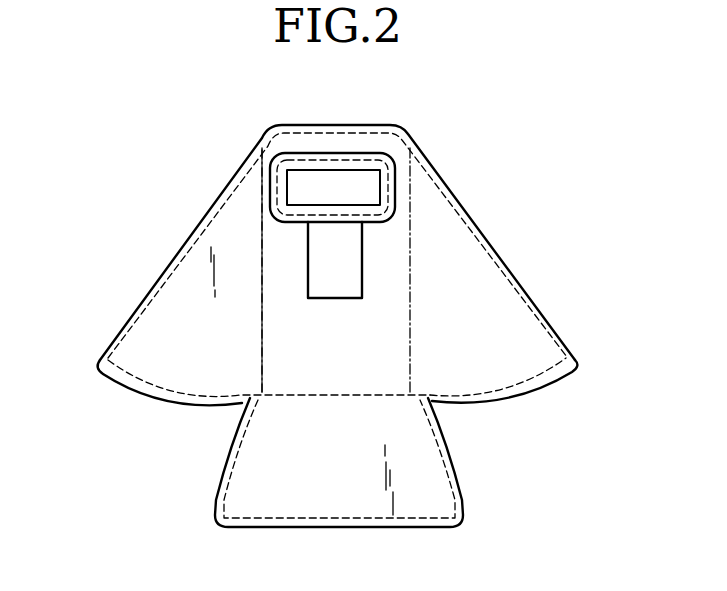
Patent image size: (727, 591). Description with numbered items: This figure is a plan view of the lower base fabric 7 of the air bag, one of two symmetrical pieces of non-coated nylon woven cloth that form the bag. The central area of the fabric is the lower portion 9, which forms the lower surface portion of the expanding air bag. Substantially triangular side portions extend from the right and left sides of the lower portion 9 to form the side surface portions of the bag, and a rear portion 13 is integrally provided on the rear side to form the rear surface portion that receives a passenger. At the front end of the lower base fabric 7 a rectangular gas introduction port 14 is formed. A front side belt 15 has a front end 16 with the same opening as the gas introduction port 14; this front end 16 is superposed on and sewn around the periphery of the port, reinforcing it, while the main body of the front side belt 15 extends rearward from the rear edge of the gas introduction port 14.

The lower base fabric 7 is at (211, 133).
The lower portion 9 is at (268, 243).
The rear portion 13 is at (430, 495).
The gas introduction port 14 is at (332, 181).
The front side belt 15 is at (365, 268).
The front end 16 is at (398, 183).